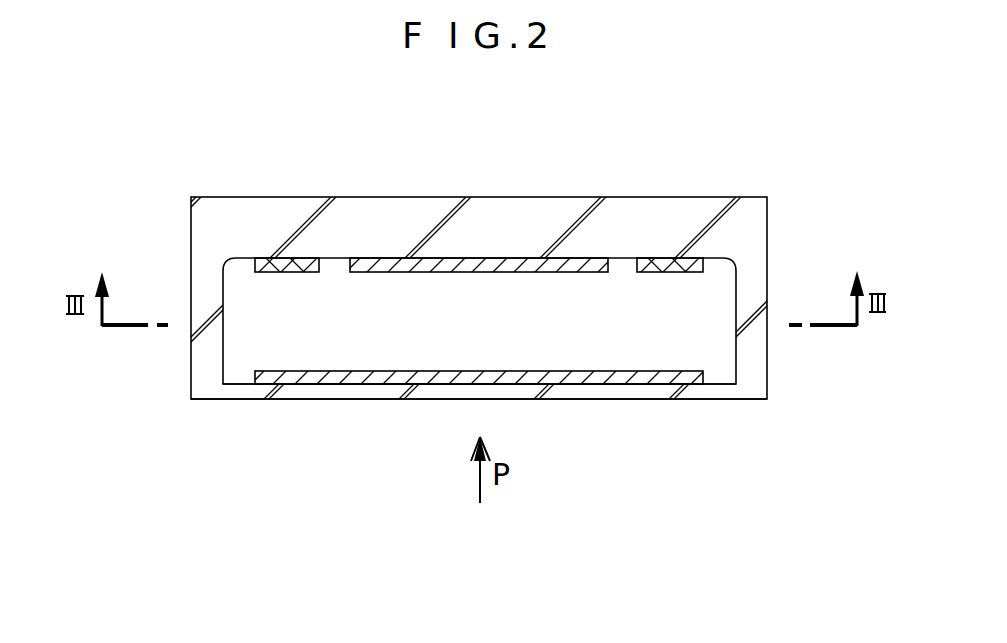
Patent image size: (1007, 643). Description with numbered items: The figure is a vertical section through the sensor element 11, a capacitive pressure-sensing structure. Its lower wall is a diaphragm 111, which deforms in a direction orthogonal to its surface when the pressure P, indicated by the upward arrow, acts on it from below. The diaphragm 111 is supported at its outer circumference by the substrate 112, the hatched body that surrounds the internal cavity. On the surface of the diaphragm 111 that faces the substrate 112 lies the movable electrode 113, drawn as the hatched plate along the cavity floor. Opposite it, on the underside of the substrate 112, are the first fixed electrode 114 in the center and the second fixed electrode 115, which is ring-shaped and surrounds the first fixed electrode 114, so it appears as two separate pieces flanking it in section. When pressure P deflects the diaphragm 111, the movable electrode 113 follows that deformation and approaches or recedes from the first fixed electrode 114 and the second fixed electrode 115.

The sensor element 11 is at (168, 165).
The diaphragm 111 is at (612, 390).
The substrate 112 is at (382, 210).
The movable electrode 113 is at (443, 378).
The first fixed electrode 114 is at (552, 275).
The second fixed electrode 115 is at (283, 267).